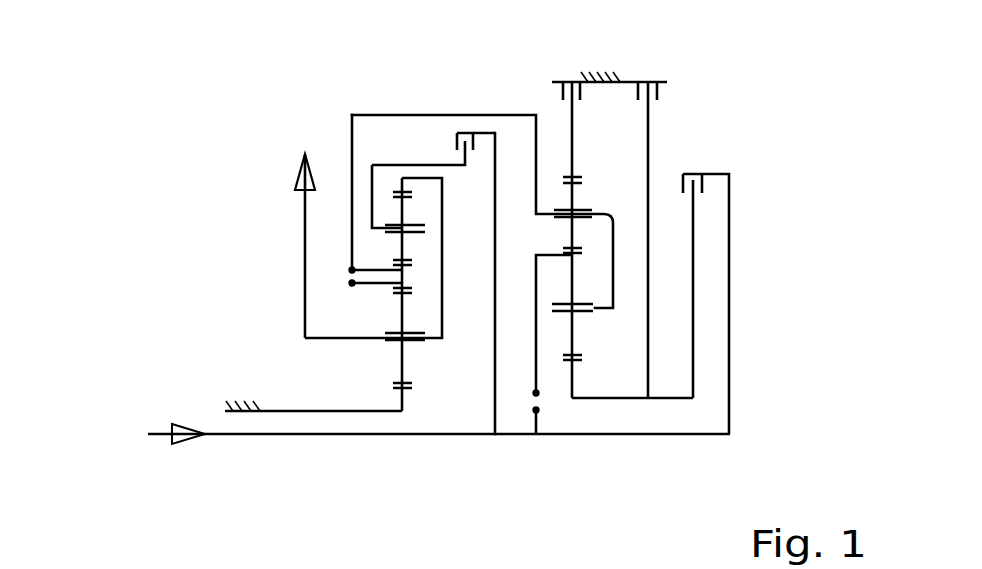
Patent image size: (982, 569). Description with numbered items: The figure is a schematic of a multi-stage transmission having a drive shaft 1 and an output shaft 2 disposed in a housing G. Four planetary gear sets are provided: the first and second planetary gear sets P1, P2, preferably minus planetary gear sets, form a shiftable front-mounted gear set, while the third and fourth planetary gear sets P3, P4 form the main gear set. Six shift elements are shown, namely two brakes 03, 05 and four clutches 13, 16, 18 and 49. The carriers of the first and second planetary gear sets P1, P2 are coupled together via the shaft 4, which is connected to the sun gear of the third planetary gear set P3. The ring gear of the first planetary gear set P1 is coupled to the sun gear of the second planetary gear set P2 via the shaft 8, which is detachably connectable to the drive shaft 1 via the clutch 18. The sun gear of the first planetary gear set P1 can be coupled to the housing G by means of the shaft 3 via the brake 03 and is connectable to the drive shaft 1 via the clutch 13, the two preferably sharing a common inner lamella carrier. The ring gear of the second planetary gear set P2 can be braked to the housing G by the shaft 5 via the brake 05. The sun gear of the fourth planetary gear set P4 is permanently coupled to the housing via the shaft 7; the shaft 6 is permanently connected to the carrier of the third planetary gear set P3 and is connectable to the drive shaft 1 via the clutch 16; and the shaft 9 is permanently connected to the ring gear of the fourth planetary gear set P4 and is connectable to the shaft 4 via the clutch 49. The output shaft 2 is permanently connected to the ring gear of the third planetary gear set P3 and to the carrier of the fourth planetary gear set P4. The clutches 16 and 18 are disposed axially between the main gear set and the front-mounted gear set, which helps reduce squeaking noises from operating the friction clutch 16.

The drive shaft 1 is at (475, 434).
The output shaft 2 is at (413, 177).
The shaft 3 is at (580, 392).
The shaft 4 is at (353, 270).
The shaft 5 is at (572, 150).
The shaft 6 is at (371, 196).
The shaft 7 is at (380, 412).
The shaft 8 is at (552, 258).
The shaft 9 is at (390, 288).
The clutch 13 is at (697, 170).
The clutch 16 is at (457, 133).
The clutch 18 is at (538, 410).
The clutch 49 is at (352, 283).
The brake 03 is at (648, 80).
The brake 05 is at (565, 80).
The housing G is at (253, 413).
The first planetary gear set P1 is at (598, 337).
The second planetary gear set P2 is at (592, 188).
The third planetary gear set P3 is at (352, 223).
The fourth planetary gear set P4 is at (376, 358).